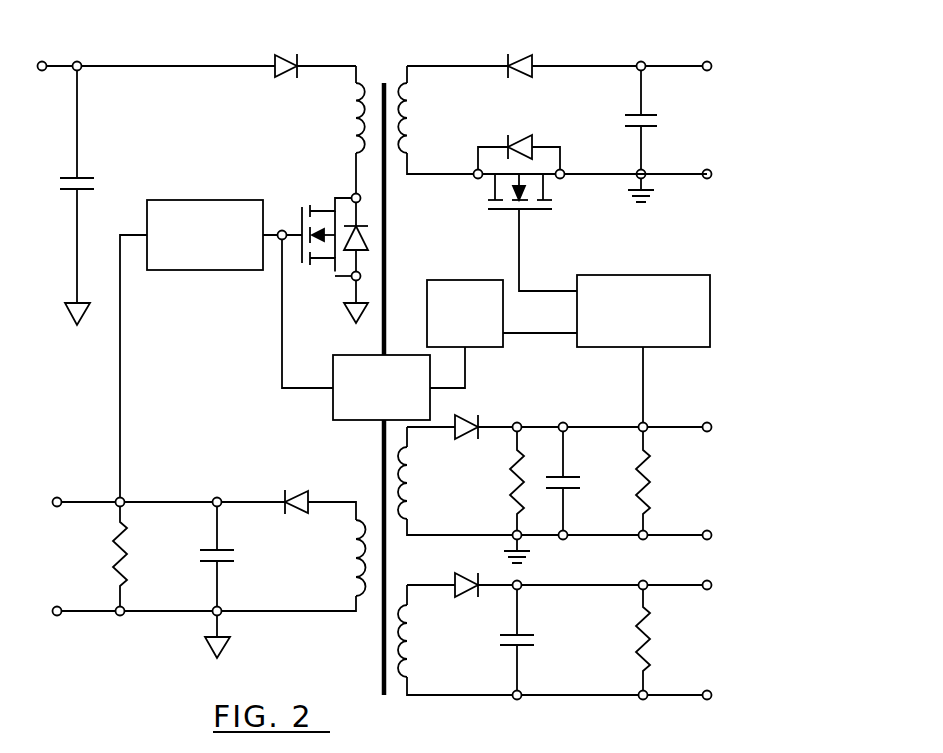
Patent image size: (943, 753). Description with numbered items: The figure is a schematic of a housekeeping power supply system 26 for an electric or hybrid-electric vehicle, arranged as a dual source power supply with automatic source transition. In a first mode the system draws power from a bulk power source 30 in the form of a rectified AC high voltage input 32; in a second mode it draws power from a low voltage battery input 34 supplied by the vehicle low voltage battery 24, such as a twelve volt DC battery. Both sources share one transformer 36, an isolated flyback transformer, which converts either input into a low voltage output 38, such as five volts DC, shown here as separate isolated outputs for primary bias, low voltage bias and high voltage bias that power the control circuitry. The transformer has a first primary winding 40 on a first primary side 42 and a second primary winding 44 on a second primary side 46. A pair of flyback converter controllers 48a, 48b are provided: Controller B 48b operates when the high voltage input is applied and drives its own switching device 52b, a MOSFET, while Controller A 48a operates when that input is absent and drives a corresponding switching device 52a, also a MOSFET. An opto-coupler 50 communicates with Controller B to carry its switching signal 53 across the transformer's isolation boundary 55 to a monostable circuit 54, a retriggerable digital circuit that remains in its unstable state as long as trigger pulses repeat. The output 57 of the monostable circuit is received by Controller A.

The vehicle low voltage battery 24 is at (661, 116).
The housekeeping power supply system 26 is at (618, 215).
The bulk power source 30 is at (41, 165).
The rectified AC high voltage input 32 is at (147, 64).
The low voltage battery input 34 is at (562, 64).
The transformer 36 is at (386, 73).
The low voltage output 38 is at (76, 505).
The first primary winding 40 is at (406, 119).
The first primary side 42 is at (439, 53).
The second primary winding 44 is at (352, 121).
The second primary side 46 is at (238, 54).
The flyback converter controller A 48a is at (697, 275).
The flyback converter controller B 48b is at (167, 200).
The opto-coupler 50 is at (333, 410).
The switching device 52a is at (530, 212).
The switching device 52b is at (322, 260).
The switching signal 53 is at (282, 352).
The monostable circuit 54 is at (497, 347).
The isolation boundary 55 is at (380, 640).
The output 57 is at (547, 334).